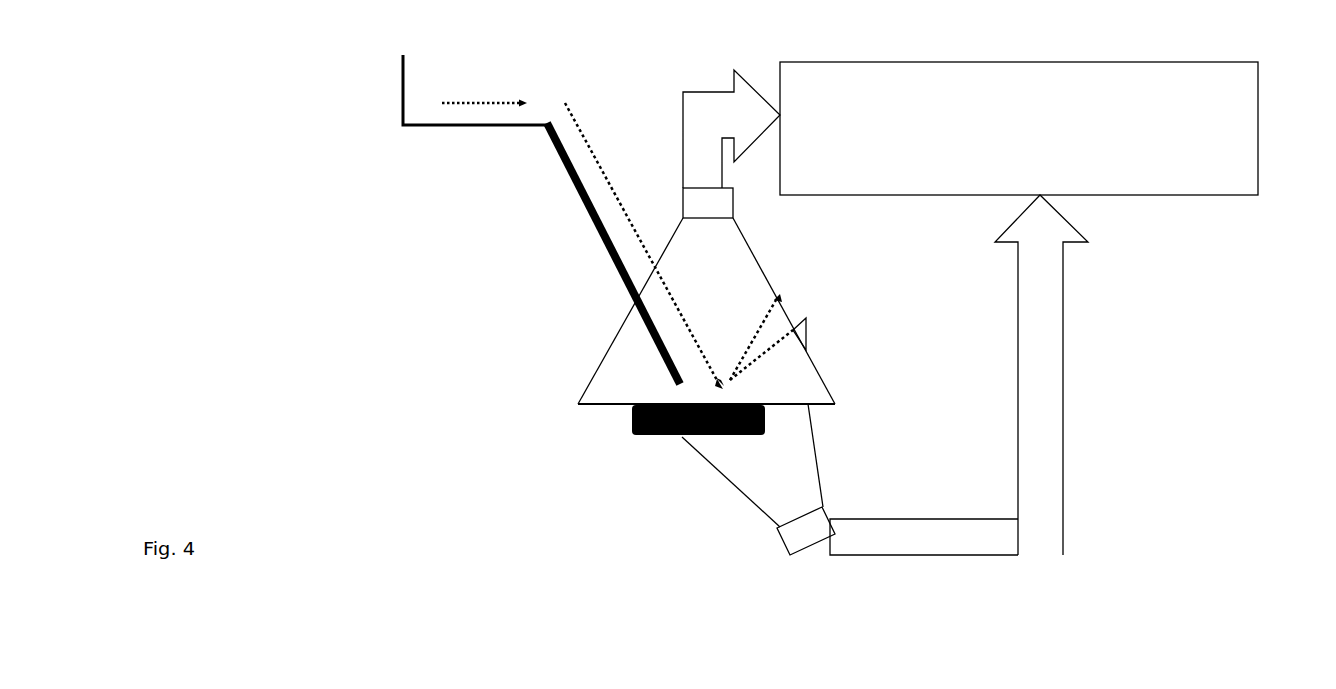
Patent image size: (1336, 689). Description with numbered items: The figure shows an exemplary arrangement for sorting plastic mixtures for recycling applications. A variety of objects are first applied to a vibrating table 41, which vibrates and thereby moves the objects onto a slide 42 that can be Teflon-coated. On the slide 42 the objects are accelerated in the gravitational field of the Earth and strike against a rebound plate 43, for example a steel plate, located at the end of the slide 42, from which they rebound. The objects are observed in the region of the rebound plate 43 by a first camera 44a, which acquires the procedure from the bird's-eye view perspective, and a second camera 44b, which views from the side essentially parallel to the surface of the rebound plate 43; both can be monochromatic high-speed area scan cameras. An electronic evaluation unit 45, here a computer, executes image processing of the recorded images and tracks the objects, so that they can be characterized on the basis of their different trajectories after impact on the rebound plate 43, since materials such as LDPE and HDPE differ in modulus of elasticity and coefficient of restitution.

The vibrating table 41 is at (403, 130).
The slide 42 is at (557, 165).
The rebound plate 43 is at (632, 422).
The first camera 44a is at (733, 203).
The second camera 44b is at (778, 540).
The electronic evaluation unit 45 is at (902, 62).